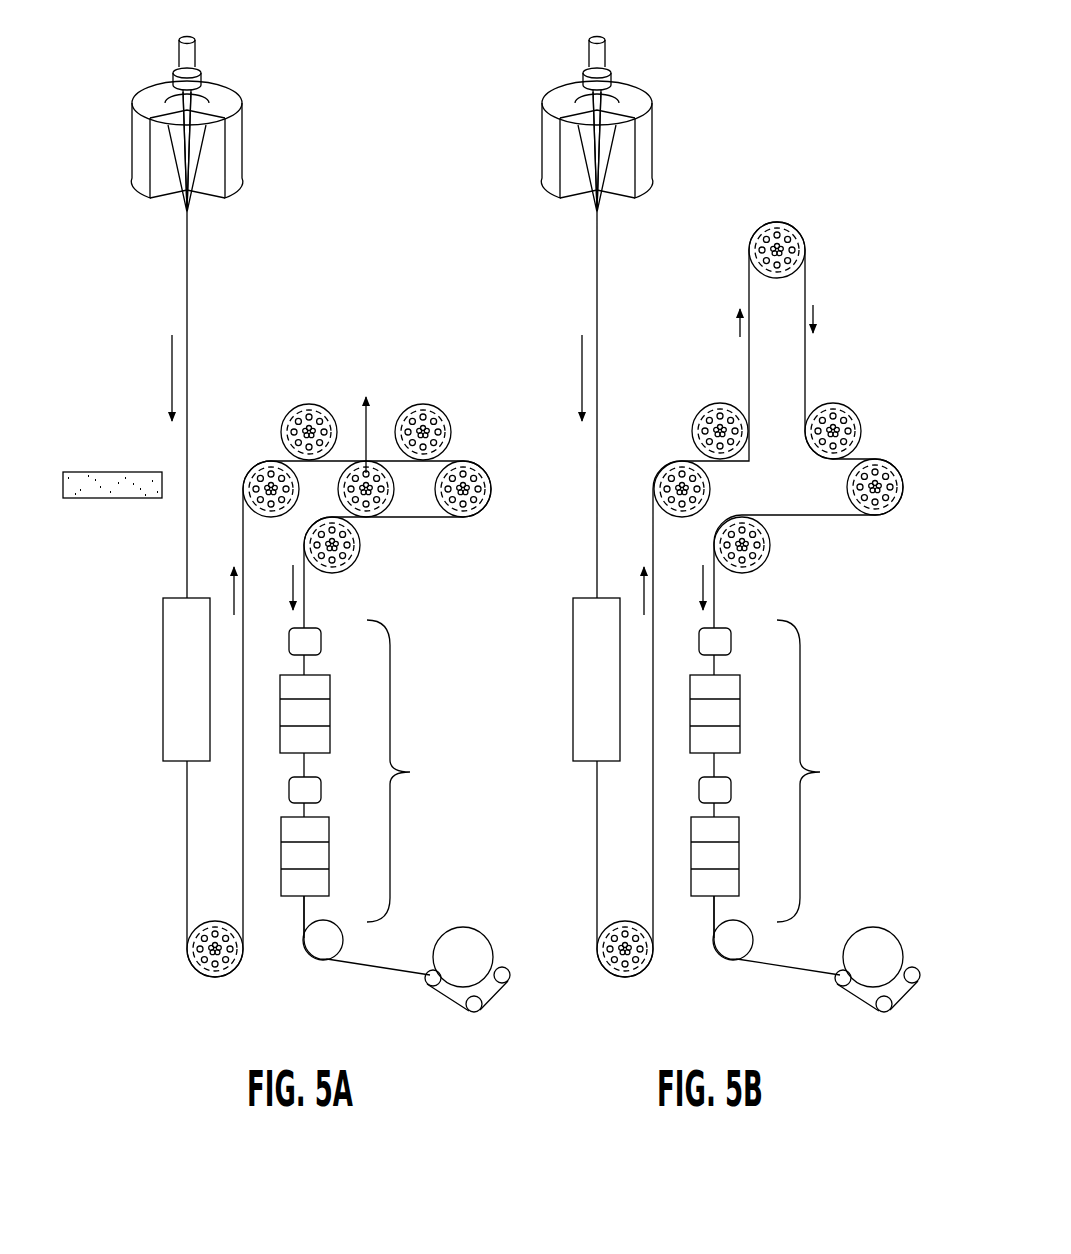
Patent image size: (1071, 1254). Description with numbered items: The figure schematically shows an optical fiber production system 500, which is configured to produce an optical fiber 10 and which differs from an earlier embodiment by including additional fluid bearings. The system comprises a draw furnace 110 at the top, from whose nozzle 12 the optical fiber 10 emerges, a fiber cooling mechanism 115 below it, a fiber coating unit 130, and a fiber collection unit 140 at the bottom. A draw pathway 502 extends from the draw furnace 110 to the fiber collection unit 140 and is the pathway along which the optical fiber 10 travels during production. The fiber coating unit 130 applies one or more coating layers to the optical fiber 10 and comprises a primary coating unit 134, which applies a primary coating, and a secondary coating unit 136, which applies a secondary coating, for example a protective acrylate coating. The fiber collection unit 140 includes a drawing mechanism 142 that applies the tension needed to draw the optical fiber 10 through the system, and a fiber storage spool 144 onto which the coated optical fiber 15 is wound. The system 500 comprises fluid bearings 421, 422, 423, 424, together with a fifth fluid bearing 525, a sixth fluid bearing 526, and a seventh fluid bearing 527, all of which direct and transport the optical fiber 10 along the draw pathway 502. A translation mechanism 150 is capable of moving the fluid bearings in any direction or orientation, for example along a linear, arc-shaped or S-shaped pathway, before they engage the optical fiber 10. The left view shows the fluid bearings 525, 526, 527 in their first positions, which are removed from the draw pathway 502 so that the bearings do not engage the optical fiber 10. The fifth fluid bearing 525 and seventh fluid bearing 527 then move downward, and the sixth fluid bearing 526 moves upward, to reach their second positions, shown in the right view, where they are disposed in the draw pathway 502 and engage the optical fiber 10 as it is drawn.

In FIG. 5A, the optical fiber production system 500 is at (291, 47).
In FIG. 5B, the optical fiber production system 500 is at (701, 47).
In FIG. 5A, the spinneret nozzle / extruded filament 12 is at (205, 103).
In FIG. 5B, the spinneret nozzle / extruded filament 12 is at (615, 103).
In FIG. 5A, the draw furnace 110 is at (243, 112).
In FIG. 5B, the draw furnace 110 is at (653, 112).
In FIG. 5A, the optical fiber 10 is at (183, 231).
In FIG. 5B, the optical fiber 10 is at (593, 231).
In FIG. 5A, the draw pathway 502 is at (183, 293).
In FIG. 5B, the draw pathway 502 is at (825, 365).
In FIG. 5A, the translation mechanism 150 is at (72, 472).
In FIG. 5A, the fiber cooling mechanism 115 is at (176, 668).
In FIG. 5B, the fiber cooling mechanism 115 is at (586, 668).
In FIG. 5A, the fluid bearing 424 is at (270, 462).
In FIG. 5B, the fluid bearing 424 is at (680, 462).
In FIG. 5A, the fifth fluid bearing 525 is at (308, 407).
In FIG. 5B, the fifth fluid bearing 525 is at (718, 406).
In FIG. 5A, the sixth fluid bearing 526 is at (390, 505).
In FIG. 5B, the sixth fluid bearing 526 is at (795, 250).
In FIG. 5A, the seventh fluid bearing 527 is at (452, 432).
In FIG. 5B, the seventh fluid bearing 527 is at (862, 431).
In FIG. 5A, the fluid bearing 422 is at (491, 489).
In FIG. 5B, the fluid bearing 422 is at (903, 487).
In FIG. 5A, the fluid bearing 423 is at (340, 555).
In FIG. 5B, the fluid bearing 423 is at (750, 555).
In FIG. 5A, the fluid bearing 421 is at (200, 947).
In FIG. 5B, the fluid bearing 421 is at (610, 947).
In FIG. 5A, the fiber coating unit 130 is at (363, 771).
In FIG. 5B, the fiber coating unit 130 is at (773, 771).
In FIG. 5A, the primary coating unit 134 is at (322, 715).
In FIG. 5B, the primary coating unit 134 is at (732, 715).
In FIG. 5A, the secondary coating unit 136 is at (324, 857).
In FIG. 5B, the secondary coating unit 136 is at (734, 857).
In FIG. 5A, the coated optical fiber 15 is at (297, 923).
In FIG. 5B, the coated optical fiber 15 is at (707, 923).
In FIG. 5A, the drawing mechanism 142 is at (322, 945).
In FIG. 5B, the drawing mechanism 142 is at (732, 945).
In FIG. 5A, the fiber storage spool 144 is at (450, 950).
In FIG. 5B, the fiber storage spool 144 is at (860, 950).
In FIG. 5A, the fiber collection unit 140 is at (414, 975).
In FIG. 5B, the fiber collection unit 140 is at (824, 975).